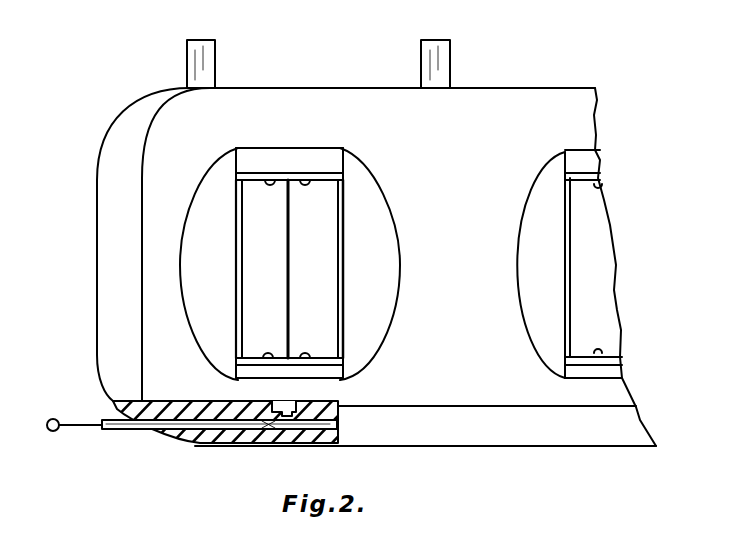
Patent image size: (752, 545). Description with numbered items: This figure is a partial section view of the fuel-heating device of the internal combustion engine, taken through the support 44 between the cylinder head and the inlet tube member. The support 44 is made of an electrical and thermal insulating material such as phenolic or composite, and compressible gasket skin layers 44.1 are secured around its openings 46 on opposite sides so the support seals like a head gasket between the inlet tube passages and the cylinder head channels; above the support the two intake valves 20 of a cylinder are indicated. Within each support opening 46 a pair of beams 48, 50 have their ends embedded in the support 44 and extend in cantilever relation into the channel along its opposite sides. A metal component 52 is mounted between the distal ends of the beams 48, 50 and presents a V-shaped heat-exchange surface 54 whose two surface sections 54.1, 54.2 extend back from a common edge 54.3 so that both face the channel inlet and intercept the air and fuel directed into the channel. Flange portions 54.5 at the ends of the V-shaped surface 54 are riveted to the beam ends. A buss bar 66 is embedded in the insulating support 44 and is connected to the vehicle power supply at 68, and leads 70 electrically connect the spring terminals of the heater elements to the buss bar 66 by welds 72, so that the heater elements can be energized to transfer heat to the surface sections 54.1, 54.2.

The intake valves 20 is at (208, 62).
The support 44 is at (130, 128).
The compressible gasket skin layers 44.1 is at (181, 107).
The openings 46 is at (208, 182).
The beam 48 is at (326, 163).
The beam 50 is at (310, 373).
The metal component 52 is at (350, 340).
The V-shaped heat-exchange surface 54 is at (266, 245).
The heat-exchange surface section 54.1 is at (330, 312).
The heat-exchange surface section 54.2 is at (256, 266).
The common edge 54.3 is at (290, 270).
The flange portions 54.5 is at (258, 358).
The buss bar 66 is at (110, 432).
The power supply connection 68 is at (62, 388).
The leads 70 is at (265, 433).
The welds 72 is at (278, 428).